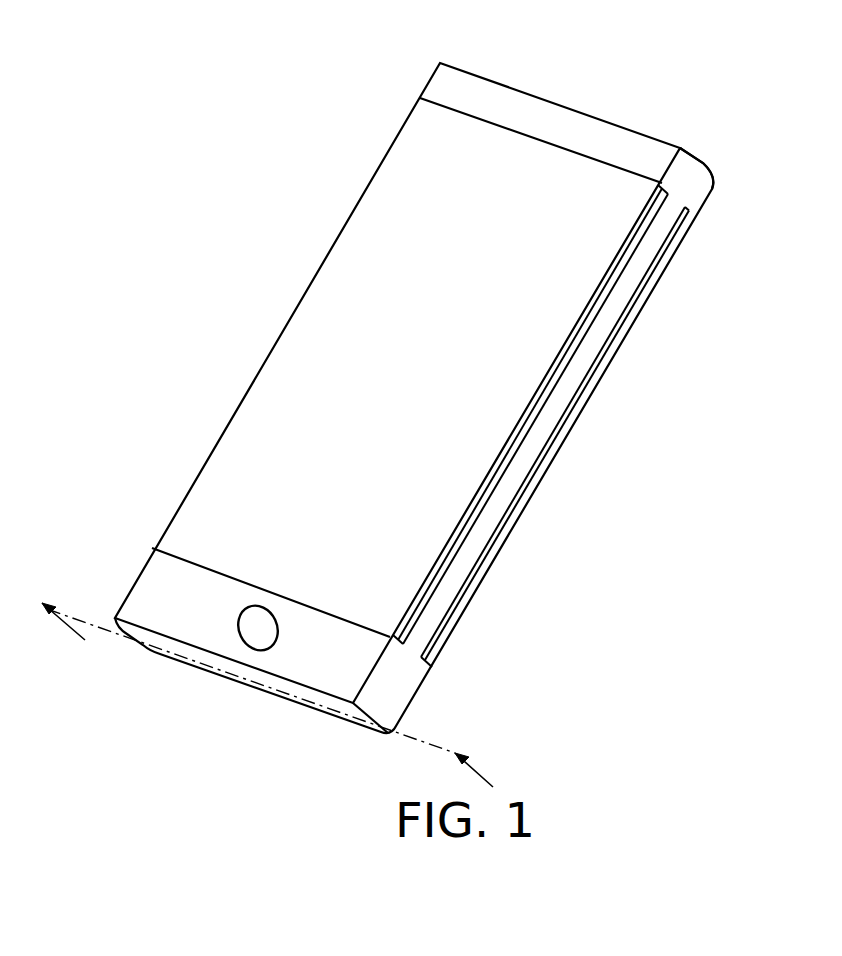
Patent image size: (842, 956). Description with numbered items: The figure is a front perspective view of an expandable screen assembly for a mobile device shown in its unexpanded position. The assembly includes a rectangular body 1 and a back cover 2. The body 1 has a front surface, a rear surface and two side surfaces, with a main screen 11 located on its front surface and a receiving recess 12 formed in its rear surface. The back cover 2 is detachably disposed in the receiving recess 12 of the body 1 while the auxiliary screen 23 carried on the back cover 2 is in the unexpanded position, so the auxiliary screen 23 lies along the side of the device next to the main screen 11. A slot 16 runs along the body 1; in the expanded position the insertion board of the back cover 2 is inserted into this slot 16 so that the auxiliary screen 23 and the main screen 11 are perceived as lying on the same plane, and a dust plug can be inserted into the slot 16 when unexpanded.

The body 1 is at (423, 396).
The main screen 11 is at (375, 267).
The receiving recess 12 is at (690, 211).
The back cover 2 is at (667, 257).
The auxiliary screen 23 is at (628, 310).
The slot 16 is at (500, 464).